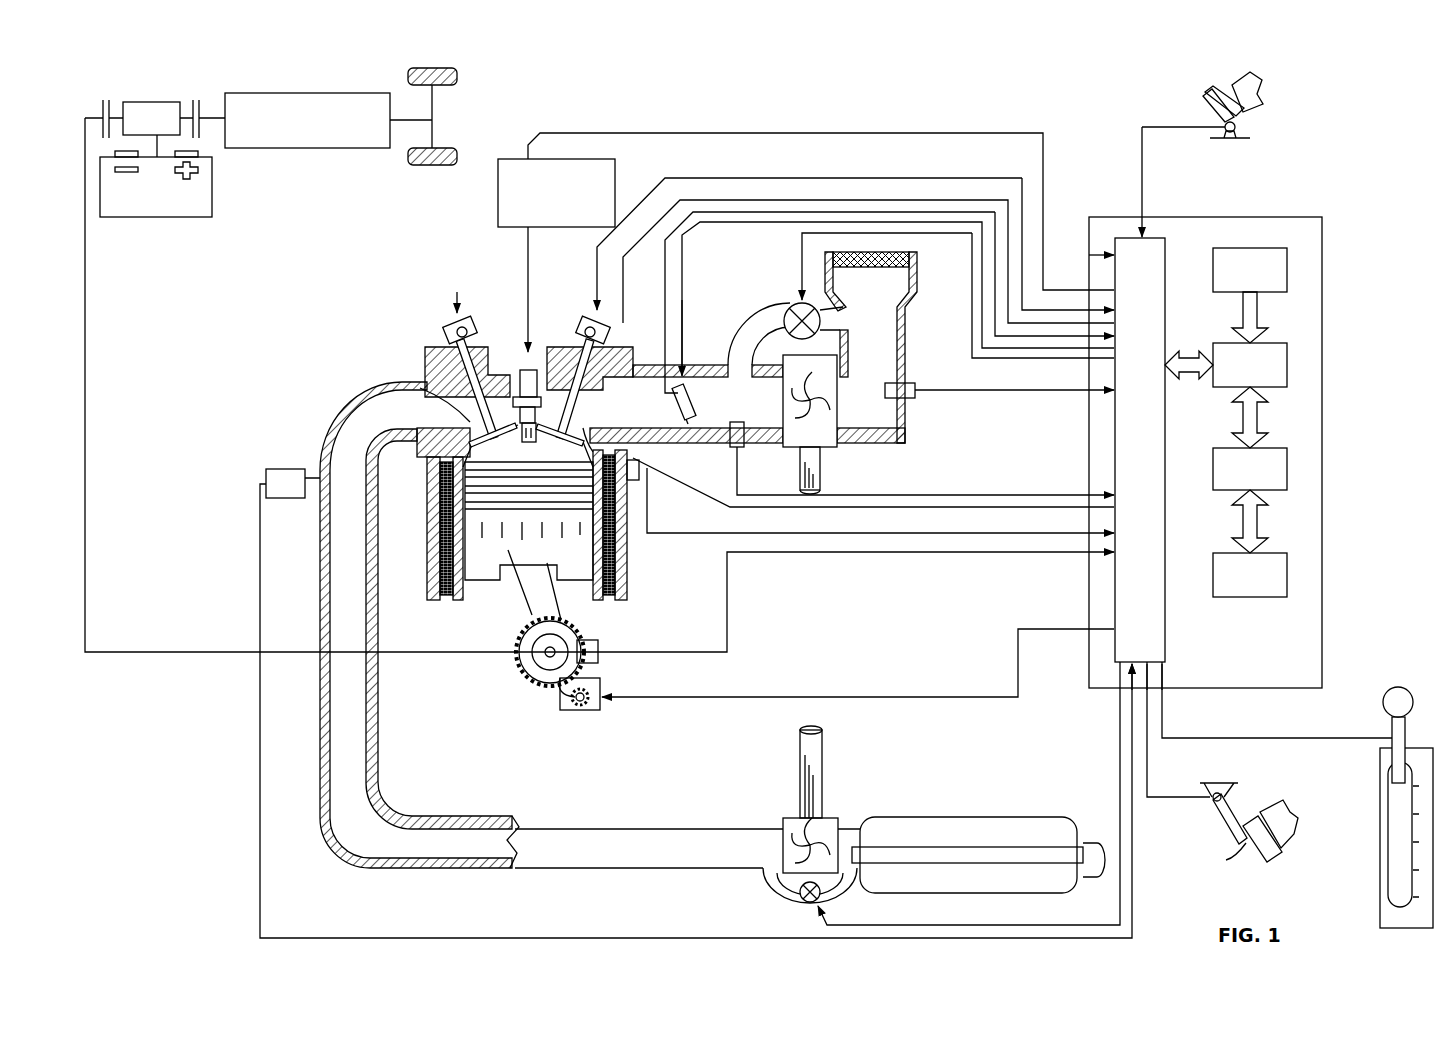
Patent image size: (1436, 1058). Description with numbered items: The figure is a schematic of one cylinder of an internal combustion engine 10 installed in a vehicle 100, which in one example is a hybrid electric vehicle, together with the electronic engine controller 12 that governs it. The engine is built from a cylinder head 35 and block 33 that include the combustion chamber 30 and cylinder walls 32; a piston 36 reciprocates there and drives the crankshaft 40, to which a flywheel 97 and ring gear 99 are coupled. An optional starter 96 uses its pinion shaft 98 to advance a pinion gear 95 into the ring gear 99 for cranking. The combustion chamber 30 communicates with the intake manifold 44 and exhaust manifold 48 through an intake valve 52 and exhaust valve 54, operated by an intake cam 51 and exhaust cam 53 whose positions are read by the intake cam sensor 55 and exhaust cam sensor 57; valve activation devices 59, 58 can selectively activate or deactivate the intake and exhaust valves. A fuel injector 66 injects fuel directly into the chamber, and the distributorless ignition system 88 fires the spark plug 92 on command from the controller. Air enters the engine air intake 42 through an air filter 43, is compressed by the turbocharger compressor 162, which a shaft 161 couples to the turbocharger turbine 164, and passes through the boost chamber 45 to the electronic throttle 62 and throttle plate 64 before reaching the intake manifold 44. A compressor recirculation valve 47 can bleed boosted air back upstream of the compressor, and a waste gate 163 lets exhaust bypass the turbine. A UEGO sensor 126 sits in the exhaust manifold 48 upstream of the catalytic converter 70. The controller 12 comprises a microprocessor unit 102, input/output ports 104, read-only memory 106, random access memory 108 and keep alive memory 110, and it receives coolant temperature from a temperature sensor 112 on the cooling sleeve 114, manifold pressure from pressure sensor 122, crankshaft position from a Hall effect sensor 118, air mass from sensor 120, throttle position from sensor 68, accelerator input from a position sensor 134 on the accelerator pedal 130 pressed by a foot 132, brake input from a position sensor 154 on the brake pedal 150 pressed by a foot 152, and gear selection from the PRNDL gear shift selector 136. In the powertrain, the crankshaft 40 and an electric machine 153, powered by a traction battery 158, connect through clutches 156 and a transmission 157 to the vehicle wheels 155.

The internal combustion engine 10 is at (360, 303).
The electronic engine controller 12 is at (1322, 223).
The combustion chamber 30 is at (523, 450).
The cylinder walls 32 is at (472, 592).
The block 33 is at (421, 492).
The cylinder head 35 is at (420, 345).
The piston 36 is at (510, 552).
The crankshaft 40 is at (540, 670).
The engine air intake 42 is at (744, 269).
The air filter 43 is at (886, 268).
The intake manifold 44 is at (660, 417).
The boost chamber 45 is at (762, 417).
The compressor recirculation valve 47 is at (790, 306).
The exhaust manifold 48 is at (408, 422).
The intake cam 51 is at (590, 320).
The intake valve 52 is at (572, 412).
The exhaust cam 53 is at (466, 318).
The exhaust valve 54 is at (437, 391).
The intake cam sensor 55 is at (607, 336).
The exhaust cam sensor 57 is at (447, 337).
The valve activation device 58 is at (470, 330).
The valve activation device 59 is at (587, 338).
The electronic throttle 62 is at (693, 407).
The throttle plate 64 is at (684, 418).
The fuel injector 66 is at (639, 470).
The throttle position sensor 68 is at (656, 373).
The catalytic converter 70 is at (898, 817).
The distributorless ignition system 88 is at (615, 165).
The spark plug 92 is at (532, 362).
The pinion gear 95 is at (590, 712).
The starter 96 is at (598, 711).
The flywheel 97 is at (527, 656).
The pinion shaft 98 is at (580, 714).
The ring gear 99 is at (547, 698).
The vehicle 100 is at (978, 108).
The microprocessor unit 102 is at (1288, 362).
The input/output ports 104 is at (1166, 250).
The read-only memory 106 is at (1288, 269).
The random access memory 108 is at (1288, 468).
The keep alive memory 110 is at (1288, 573).
The temperature sensor 112 is at (880, 500).
The cooling sleeve 114 is at (608, 555).
The Hall effect sensor 118 is at (598, 642).
The air mass sensor 120 is at (915, 383).
The pressure sensor 122 is at (730, 447).
The Universal Exhaust Gas Oxygen sensor 126 is at (266, 472).
The accelerator pedal 130 is at (1212, 102).
The foot 132 is at (1262, 82).
The position sensor 134 is at (1236, 127).
The gear shift selector 136 is at (1392, 736).
The brake pedal 150 is at (1262, 753).
The foot 152 is at (1280, 812).
The position sensor 154 is at (1212, 797).
The electric machine 153 is at (152, 102).
The vehicle wheels 155 is at (446, 85).
The clutch 156 is at (103, 103).
The transmission 157 is at (335, 148).
The traction battery 158 is at (150, 217).
The shaft 161 is at (800, 468).
The turbocharger compressor 162 is at (823, 430).
The waste gate 163 is at (806, 904).
The turbocharger turbine 164 is at (790, 818).